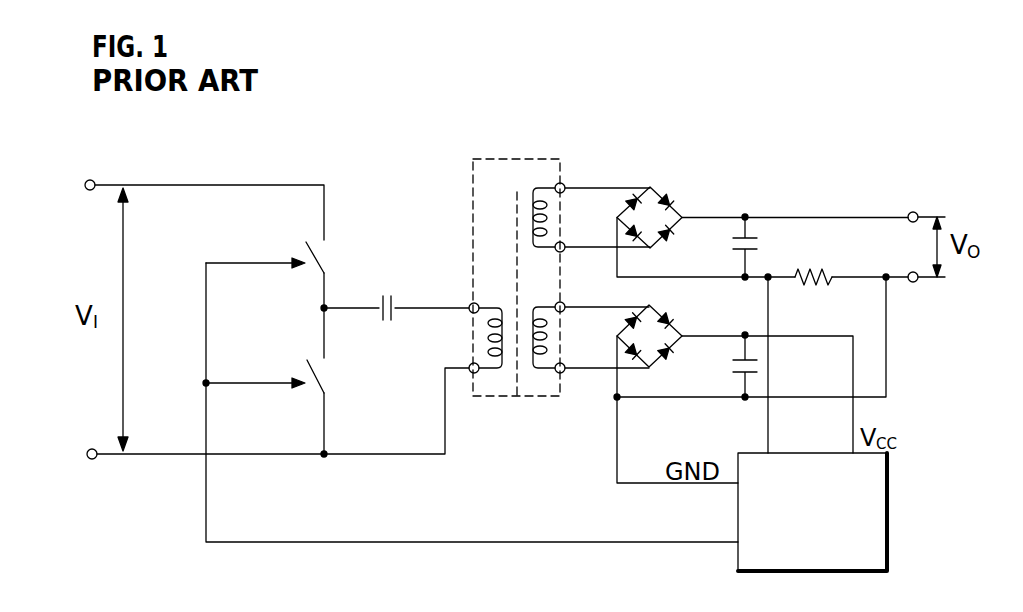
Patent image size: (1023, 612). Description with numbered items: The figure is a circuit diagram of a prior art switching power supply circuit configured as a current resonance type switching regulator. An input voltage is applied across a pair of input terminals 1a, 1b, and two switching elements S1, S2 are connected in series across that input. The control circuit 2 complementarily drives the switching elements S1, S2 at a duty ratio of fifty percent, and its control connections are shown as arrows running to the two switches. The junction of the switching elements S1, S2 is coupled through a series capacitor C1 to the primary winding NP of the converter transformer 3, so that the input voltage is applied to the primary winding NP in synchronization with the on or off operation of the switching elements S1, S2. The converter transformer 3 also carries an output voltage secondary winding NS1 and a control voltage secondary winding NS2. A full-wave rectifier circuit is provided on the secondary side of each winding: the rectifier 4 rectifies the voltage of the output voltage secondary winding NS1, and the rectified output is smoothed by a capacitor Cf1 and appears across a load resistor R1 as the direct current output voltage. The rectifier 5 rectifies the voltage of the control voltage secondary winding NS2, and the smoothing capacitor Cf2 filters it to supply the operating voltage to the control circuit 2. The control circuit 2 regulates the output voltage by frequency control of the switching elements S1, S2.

The input terminal 1a is at (89, 180).
The input terminal 1b is at (89, 459).
The control circuit 2 is at (888, 512).
The converter transformer 3 is at (510, 278).
The rectifier bridge 4 is at (668, 190).
The rectifier bridge 5 is at (668, 356).
The switching element S1 is at (339, 250).
The switching element S2 is at (337, 379).
The capacitor C1 is at (396, 294).
The primary winding NP is at (464, 338).
The output voltage secondary winding NS1 is at (537, 184).
The control voltage secondary winding NS2 is at (537, 378).
The load resistor R1 is at (818, 262).
The smoothing capacitor Cf1 is at (762, 245).
The smoothing capacitor Cf2 is at (752, 382).